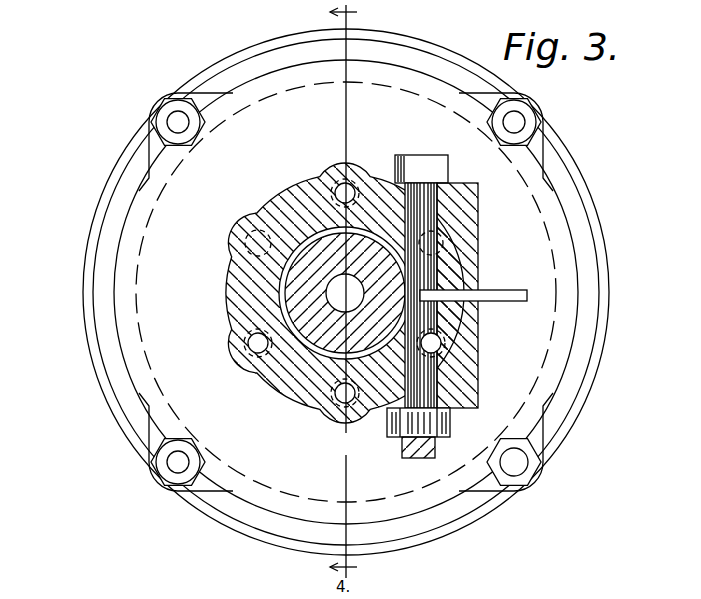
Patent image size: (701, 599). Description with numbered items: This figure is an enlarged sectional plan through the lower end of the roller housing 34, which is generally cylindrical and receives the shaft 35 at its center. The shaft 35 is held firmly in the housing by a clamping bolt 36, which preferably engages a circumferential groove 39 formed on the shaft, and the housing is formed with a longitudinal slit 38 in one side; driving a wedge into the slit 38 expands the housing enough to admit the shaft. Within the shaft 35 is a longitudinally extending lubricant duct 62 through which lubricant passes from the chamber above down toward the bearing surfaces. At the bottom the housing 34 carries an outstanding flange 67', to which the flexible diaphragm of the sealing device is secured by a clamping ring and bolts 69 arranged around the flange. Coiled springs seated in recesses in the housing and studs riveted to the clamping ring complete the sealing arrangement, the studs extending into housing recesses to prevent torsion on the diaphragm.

The lower end of the housing 34 is at (280, 293).
The shaft 35 is at (303, 263).
The clamping bolt 36 is at (410, 167).
The longitudinal slit 38 is at (507, 297).
The circumferential groove 39 is at (283, 300).
The lubricant duct 62 is at (350, 302).
The outstanding flange 67' is at (321, 292).
The bolts 69 is at (172, 115).